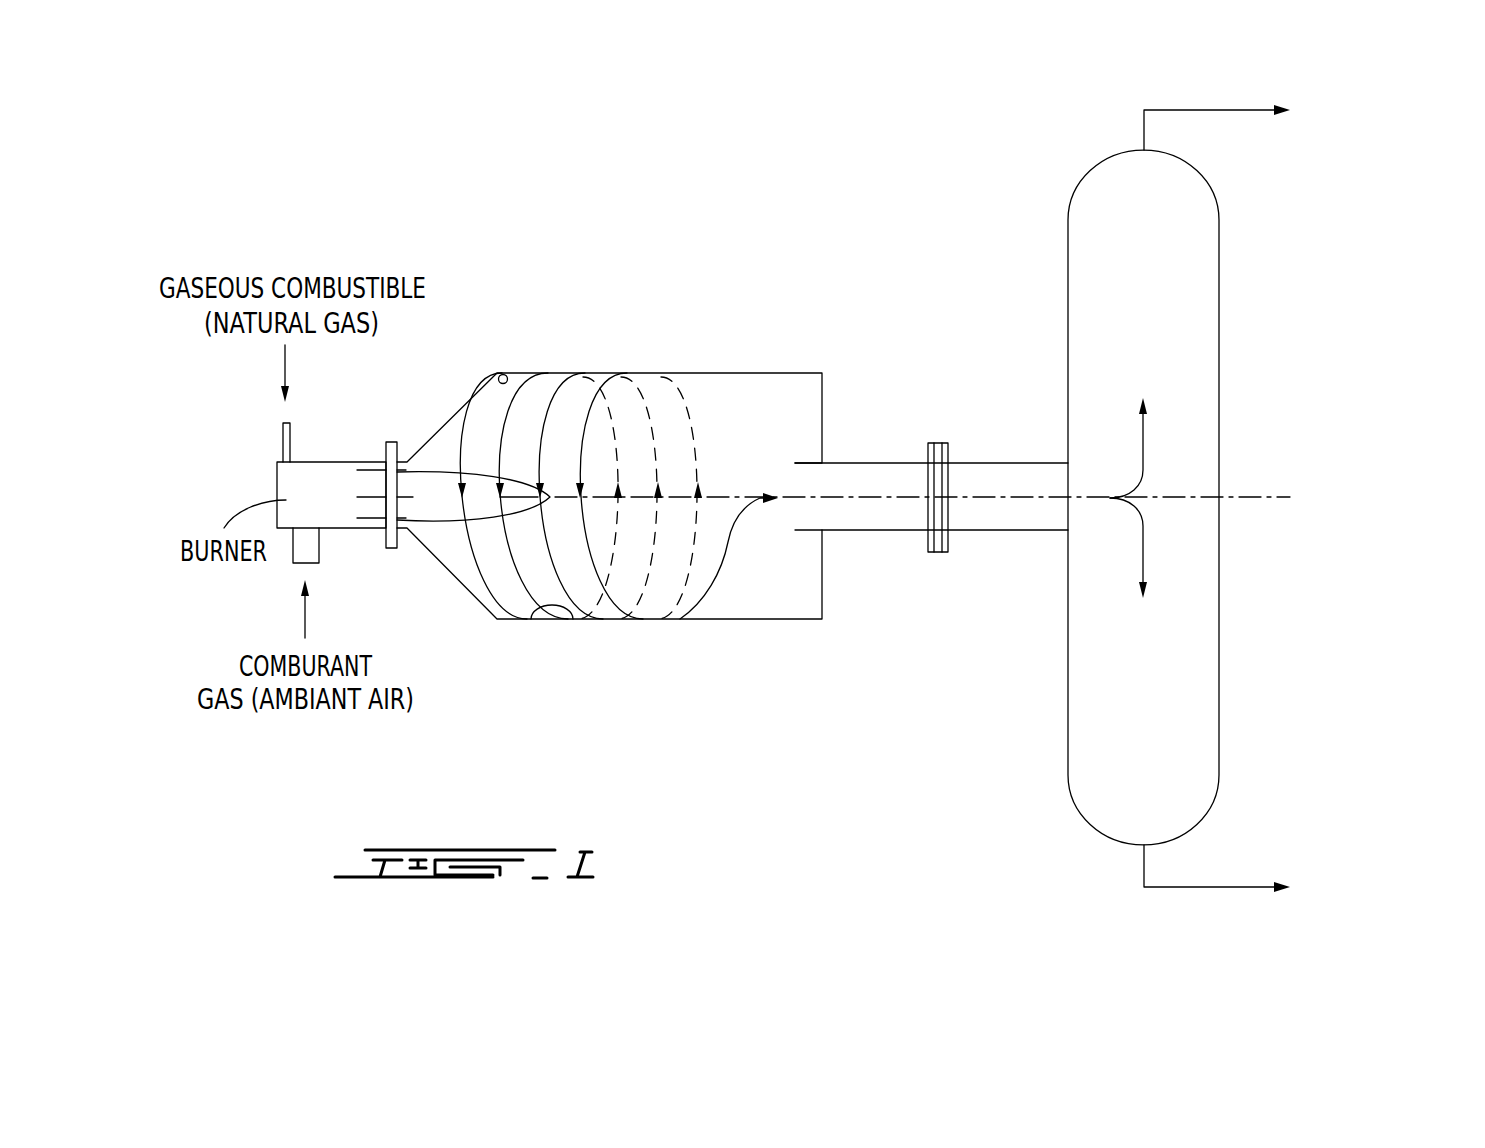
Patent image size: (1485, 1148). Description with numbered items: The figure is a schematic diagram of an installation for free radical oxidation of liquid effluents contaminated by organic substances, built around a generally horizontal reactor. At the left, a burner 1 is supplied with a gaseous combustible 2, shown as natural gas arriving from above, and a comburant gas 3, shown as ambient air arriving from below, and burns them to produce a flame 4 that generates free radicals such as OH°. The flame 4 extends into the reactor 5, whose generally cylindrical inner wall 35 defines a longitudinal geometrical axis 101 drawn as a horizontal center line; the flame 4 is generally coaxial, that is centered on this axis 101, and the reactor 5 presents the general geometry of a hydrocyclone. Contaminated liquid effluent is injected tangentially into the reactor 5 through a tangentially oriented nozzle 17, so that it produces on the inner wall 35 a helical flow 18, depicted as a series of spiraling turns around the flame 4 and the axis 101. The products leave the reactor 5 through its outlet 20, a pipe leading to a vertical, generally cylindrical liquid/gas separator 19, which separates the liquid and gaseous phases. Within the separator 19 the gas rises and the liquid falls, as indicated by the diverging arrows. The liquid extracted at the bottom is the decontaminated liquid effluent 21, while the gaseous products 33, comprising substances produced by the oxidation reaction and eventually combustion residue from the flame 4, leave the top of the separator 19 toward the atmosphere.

The burner 1 is at (333, 462).
The gaseous combustible 2 is at (288, 359).
The comburant gas 3 is at (307, 629).
The flame 4 is at (517, 477).
The reactor 5 is at (695, 364).
The tangentially oriented nozzle 17 is at (520, 373).
The helical flow 18 is at (562, 408).
The liquid/gas separator 19 is at (1219, 328).
The outlet 20 is at (892, 463).
The decontaminated liquid effluent 21 is at (1167, 887).
The gaseous products 33 is at (1178, 110).
The generally cylindrical inner wall 35 is at (572, 616).
The longitudinal geometrical axis 101 is at (1238, 498).